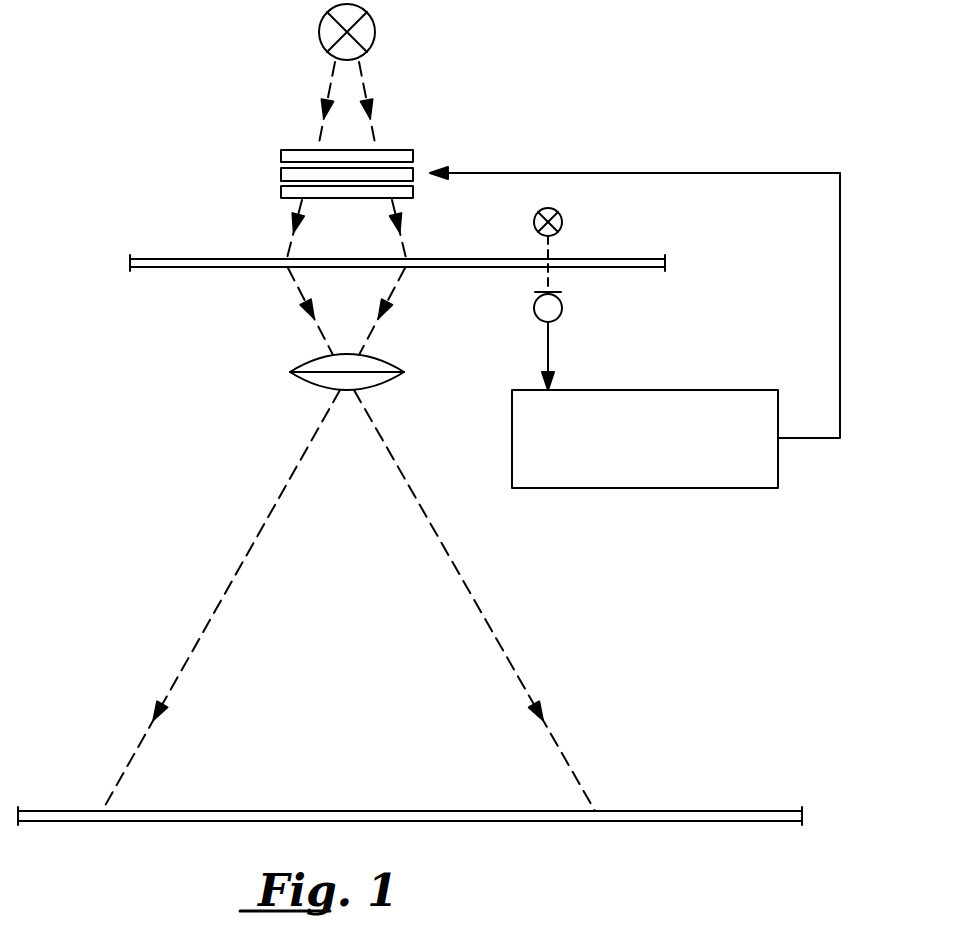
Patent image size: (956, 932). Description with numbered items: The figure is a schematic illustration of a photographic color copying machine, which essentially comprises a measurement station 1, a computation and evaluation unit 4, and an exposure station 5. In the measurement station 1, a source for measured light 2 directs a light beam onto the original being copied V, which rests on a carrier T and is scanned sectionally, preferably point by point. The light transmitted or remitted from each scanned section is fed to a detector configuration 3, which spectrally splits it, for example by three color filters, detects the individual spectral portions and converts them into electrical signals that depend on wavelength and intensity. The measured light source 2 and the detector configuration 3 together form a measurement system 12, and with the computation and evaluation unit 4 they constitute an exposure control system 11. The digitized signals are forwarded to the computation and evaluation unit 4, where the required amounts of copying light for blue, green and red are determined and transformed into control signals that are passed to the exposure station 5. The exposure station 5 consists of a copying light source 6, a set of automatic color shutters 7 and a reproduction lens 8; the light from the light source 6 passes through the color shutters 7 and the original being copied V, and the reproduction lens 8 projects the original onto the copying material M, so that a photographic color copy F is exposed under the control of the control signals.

The measurement station 1 is at (627, 145).
The source for measured light 2 is at (534, 222).
The detector configuration 3 is at (538, 305).
The computation and evaluation unit 4 is at (724, 472).
The exposure station 5 is at (80, 25).
The light source 6 is at (363, 30).
The set of automatic color shutters 7 is at (264, 143).
The reproduction lens 8 is at (302, 383).
The exposure control system 11 is at (728, 155).
The measurement system 12 is at (570, 200).
The carrier plate T is at (222, 268).
The original being copied V is at (312, 258).
The photographic color copy F is at (375, 811).
The copying material M is at (730, 811).